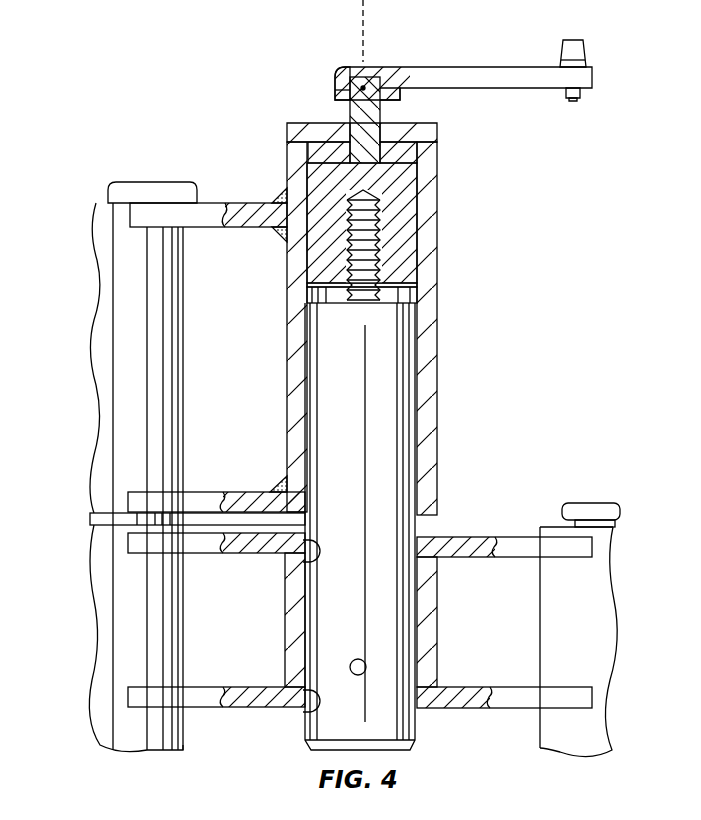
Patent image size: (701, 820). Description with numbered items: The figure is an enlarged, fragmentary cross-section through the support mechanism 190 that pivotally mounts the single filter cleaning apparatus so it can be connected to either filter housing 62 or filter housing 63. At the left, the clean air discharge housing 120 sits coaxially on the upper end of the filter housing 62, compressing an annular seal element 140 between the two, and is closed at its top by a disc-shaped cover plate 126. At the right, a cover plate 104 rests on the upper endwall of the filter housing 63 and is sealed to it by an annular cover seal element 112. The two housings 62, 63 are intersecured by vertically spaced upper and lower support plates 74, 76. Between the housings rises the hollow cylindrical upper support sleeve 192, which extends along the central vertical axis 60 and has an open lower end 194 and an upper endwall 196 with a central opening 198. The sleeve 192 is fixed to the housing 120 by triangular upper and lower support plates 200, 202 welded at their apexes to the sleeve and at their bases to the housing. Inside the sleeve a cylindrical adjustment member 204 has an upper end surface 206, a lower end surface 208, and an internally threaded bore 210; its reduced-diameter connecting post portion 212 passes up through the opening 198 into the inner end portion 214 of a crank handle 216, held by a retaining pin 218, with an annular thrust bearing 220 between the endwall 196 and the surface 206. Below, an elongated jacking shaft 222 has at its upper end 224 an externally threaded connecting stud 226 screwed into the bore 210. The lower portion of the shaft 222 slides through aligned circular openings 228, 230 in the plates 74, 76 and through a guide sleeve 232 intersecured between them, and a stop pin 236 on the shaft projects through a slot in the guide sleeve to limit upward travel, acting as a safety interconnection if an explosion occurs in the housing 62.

The central vertical axis 60 is at (364, 30).
The filter housing 62 is at (184, 664).
The filter housing 63 is at (540, 626).
The upper support plate 74 is at (513, 537).
The lower support plate 76 is at (497, 709).
The cover plate 104 is at (610, 503).
The annular cover seal element 112 is at (615, 523).
The clean air discharge housing 120 is at (185, 402).
The cover plate 126 is at (176, 182).
The annular seal element 140 is at (92, 519).
The support mechanism 190 is at (519, 352).
The upper support sleeve 192 is at (364, 304).
The open lower end 194 is at (437, 492).
The upper endwall 196 is at (302, 122).
The central opening 198 is at (352, 124).
The upper support plate 200 is at (228, 203).
The lower support plate 202 is at (206, 492).
The cylindrical adjustment member 204 is at (412, 238).
The upper end surface 206 is at (410, 154).
The lower end surface 208 is at (414, 298).
The internally threaded bore 210 is at (376, 209).
The connecting post portion 212 is at (386, 100).
The inner end portion 214 is at (351, 64).
The crank handle 216 is at (453, 66).
The retaining pin 218 is at (336, 90).
The annular thrust bearing 220 is at (318, 154).
The jacking shaft 222 is at (402, 526).
The upper end 224 is at (310, 292).
The connecting stud 226 is at (410, 286).
The circular opening 228 is at (301, 561).
The circular opening 230 is at (303, 706).
The guide sleeve 232 is at (285, 622).
The stop pin 236 is at (358, 676).